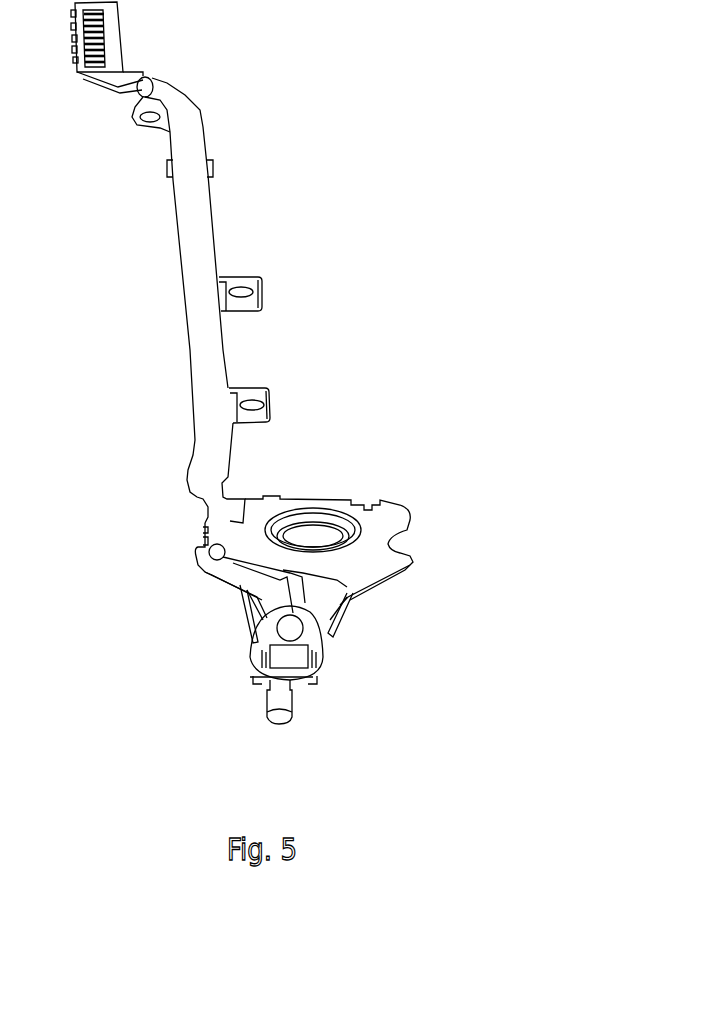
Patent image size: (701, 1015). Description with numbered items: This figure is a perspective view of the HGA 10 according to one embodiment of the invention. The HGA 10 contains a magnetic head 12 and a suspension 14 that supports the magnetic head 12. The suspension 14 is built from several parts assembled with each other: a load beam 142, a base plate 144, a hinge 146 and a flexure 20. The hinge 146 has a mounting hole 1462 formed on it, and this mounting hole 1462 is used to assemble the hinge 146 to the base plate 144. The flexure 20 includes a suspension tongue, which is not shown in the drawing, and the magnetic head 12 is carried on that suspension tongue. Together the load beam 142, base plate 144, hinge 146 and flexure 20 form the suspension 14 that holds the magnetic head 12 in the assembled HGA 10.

The HGA 10 is at (366, 113).
The flexure 20 is at (217, 452).
The suspension 14 is at (538, 400).
The hinge 146 is at (367, 564).
The base plate 144 is at (345, 595).
The load beam 142 is at (280, 708).
The magnetic head 12 is at (283, 655).
The mounting hole 1462 is at (320, 542).